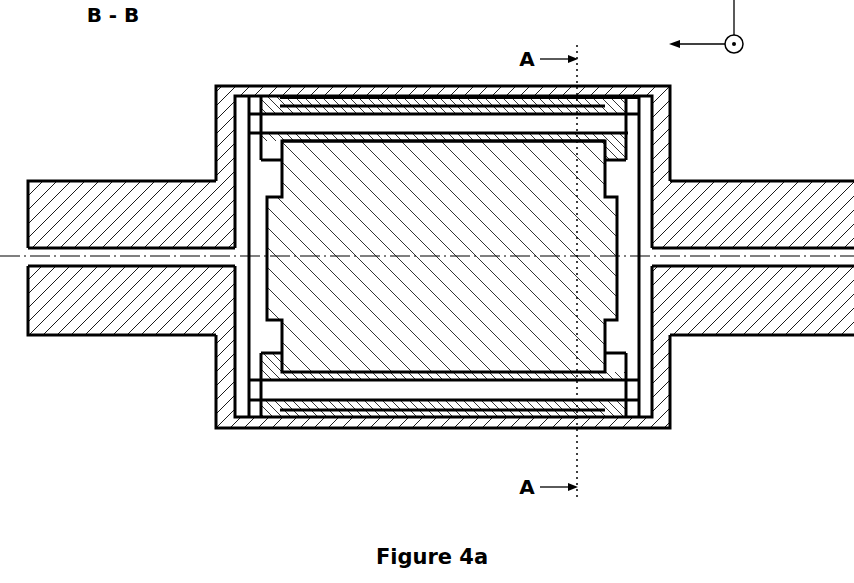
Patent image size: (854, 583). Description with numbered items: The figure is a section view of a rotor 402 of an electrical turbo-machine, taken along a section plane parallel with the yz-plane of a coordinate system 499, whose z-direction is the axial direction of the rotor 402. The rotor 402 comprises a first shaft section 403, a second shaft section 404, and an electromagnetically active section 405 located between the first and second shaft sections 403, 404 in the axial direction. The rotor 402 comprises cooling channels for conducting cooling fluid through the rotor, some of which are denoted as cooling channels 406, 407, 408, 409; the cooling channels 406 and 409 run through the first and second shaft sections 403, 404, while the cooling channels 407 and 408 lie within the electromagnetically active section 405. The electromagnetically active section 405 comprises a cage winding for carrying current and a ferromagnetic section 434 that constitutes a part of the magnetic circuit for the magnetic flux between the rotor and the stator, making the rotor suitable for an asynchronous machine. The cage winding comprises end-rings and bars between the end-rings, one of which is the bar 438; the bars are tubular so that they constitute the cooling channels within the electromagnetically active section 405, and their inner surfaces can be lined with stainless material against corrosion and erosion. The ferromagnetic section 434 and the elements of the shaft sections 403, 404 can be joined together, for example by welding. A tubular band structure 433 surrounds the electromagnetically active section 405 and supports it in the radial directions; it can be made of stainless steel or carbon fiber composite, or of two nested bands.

The rotor 402 is at (80, 99).
The first shaft section 403 is at (106, 225).
The second shaft section 404 is at (734, 225).
The electromagnetically active section 405 is at (265, 447).
The cooling channel 406 is at (112, 267).
The cooling channel 407 is at (373, 143).
The cooling channel 408 is at (448, 373).
The cooling channel 409 is at (753, 266).
The tubular band structure 433 is at (418, 87).
The ferromagnetic section 434 is at (434, 211).
The bar 438 is at (498, 142).
The coordinate system 499 is at (678, 22).